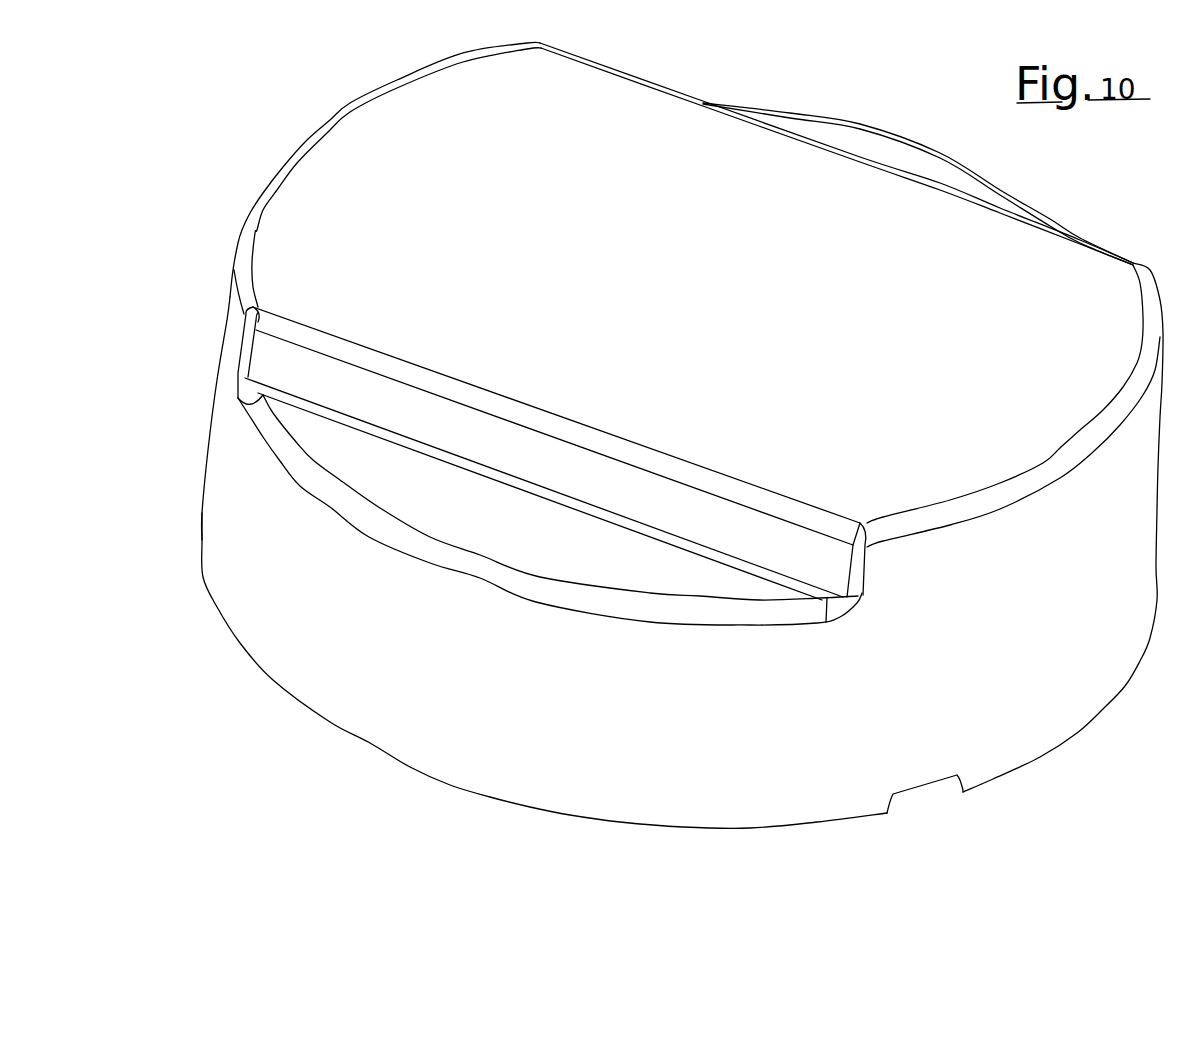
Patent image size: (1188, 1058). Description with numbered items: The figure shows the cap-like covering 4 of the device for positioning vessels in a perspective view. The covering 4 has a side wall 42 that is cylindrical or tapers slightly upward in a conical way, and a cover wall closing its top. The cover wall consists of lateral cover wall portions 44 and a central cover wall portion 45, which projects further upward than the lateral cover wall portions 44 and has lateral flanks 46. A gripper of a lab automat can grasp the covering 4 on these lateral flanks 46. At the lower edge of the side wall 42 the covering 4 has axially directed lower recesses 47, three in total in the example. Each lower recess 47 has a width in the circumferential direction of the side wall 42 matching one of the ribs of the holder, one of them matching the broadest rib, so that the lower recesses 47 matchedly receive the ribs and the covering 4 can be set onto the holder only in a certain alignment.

The covering 4 is at (237, 117).
The side wall 42 is at (519, 704).
The lateral cover wall portions 44 is at (888, 160).
The central cover wall portion 45 is at (640, 300).
The lateral flanks 46 is at (553, 480).
The lower recesses 47 is at (937, 804).